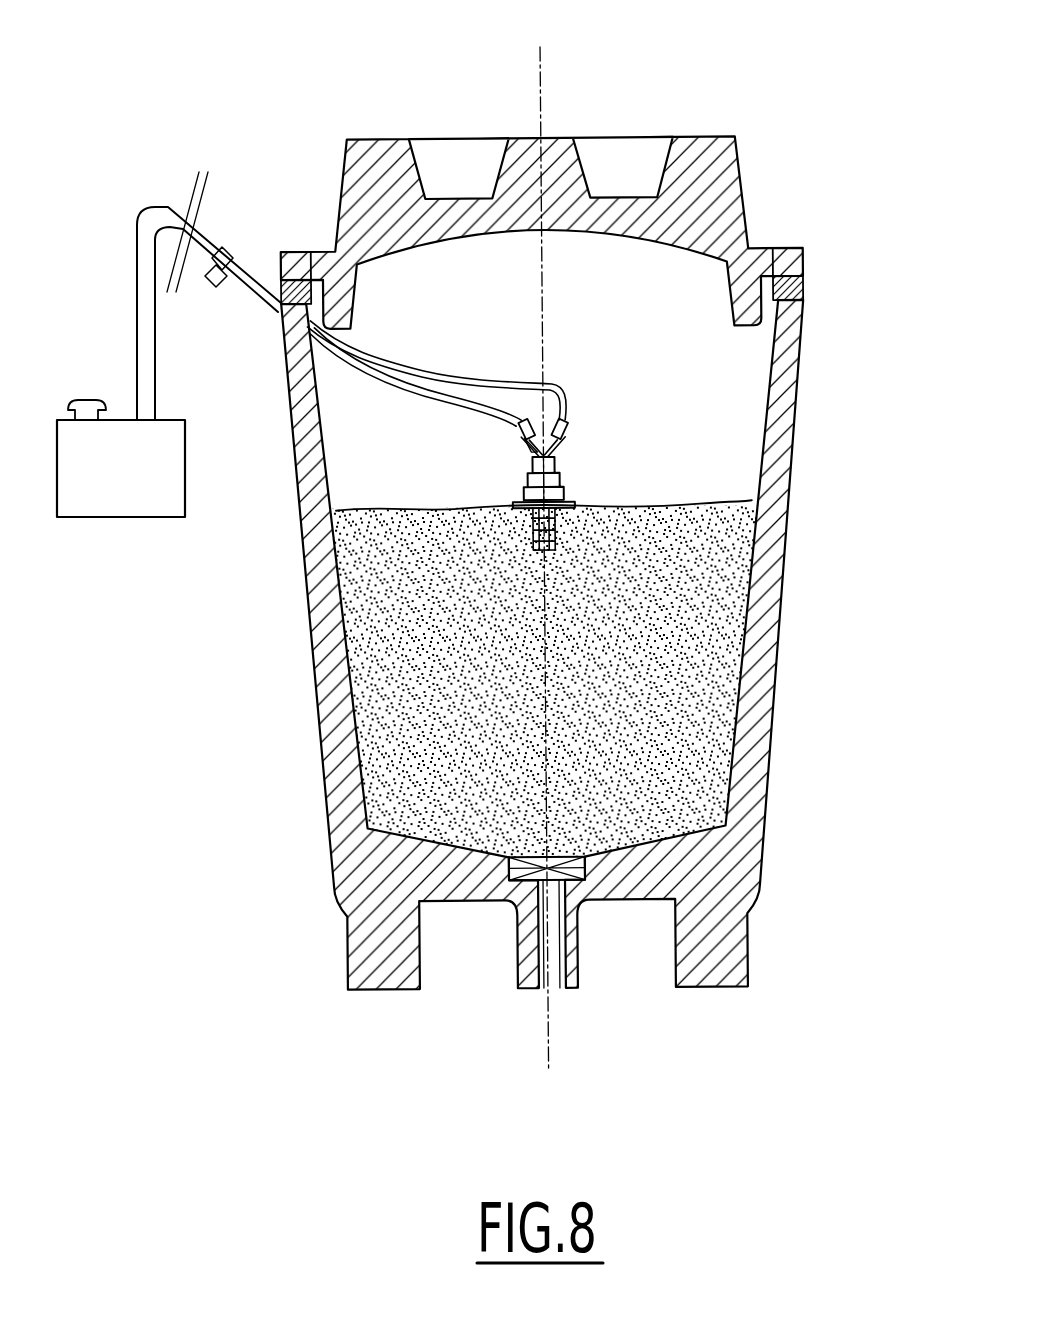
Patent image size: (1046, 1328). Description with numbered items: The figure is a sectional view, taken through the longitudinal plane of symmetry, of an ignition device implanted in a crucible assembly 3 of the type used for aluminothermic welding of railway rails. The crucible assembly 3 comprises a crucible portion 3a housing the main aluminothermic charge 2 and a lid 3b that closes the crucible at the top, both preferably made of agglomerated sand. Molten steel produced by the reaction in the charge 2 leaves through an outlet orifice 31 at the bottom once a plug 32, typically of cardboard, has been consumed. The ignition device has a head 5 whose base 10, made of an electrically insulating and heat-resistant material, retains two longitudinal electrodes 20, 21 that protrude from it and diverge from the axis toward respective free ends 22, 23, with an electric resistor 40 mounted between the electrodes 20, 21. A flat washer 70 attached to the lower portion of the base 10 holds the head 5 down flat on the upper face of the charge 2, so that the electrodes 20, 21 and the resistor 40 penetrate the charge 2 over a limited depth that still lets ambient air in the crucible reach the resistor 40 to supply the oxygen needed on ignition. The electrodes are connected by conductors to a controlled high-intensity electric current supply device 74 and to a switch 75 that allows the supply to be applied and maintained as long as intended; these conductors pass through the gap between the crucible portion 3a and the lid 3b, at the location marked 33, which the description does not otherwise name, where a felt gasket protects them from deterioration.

The aluminothermic weld charge 2 is at (367, 748).
The crucible assembly 3 is at (533, 583).
The crucible portion 3a is at (747, 800).
The lid 3b is at (370, 153).
The head 5 is at (470, 500).
The base 10 is at (562, 463).
The electrode 20 is at (557, 443).
The electrode 21 is at (527, 443).
The free end 22 is at (572, 423).
The free end 23 is at (517, 430).
The outlet orifice 31 is at (557, 975).
The plug 32 is at (507, 902).
The inlet passage 33 is at (277, 280).
The electric resistor 40 is at (553, 543).
The flat washer 70 is at (570, 497).
The electric current supply device 74 is at (125, 482).
The switch 75 is at (82, 400).